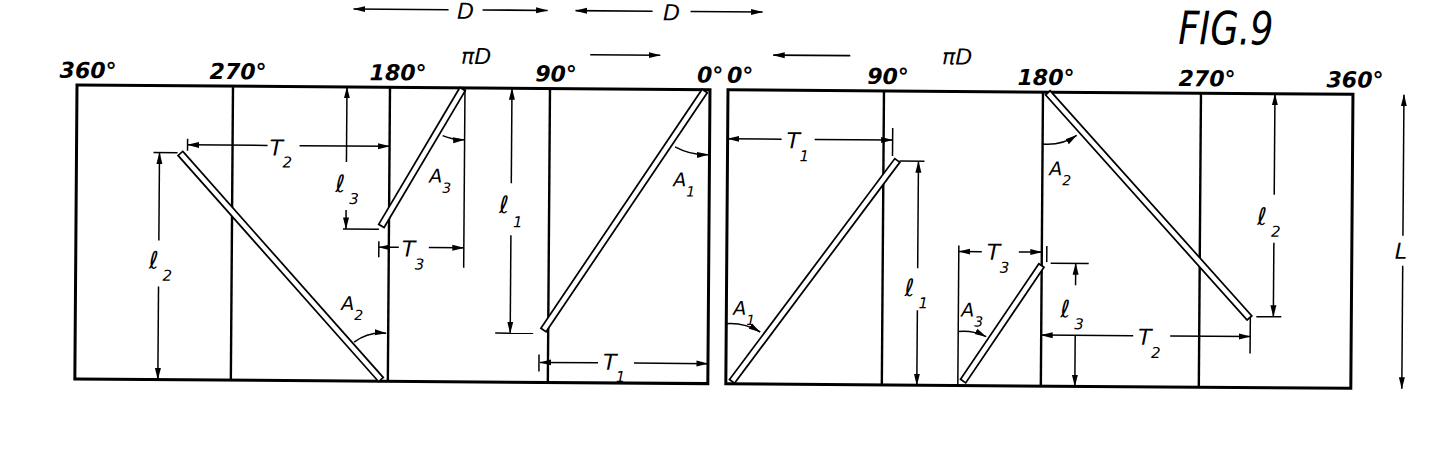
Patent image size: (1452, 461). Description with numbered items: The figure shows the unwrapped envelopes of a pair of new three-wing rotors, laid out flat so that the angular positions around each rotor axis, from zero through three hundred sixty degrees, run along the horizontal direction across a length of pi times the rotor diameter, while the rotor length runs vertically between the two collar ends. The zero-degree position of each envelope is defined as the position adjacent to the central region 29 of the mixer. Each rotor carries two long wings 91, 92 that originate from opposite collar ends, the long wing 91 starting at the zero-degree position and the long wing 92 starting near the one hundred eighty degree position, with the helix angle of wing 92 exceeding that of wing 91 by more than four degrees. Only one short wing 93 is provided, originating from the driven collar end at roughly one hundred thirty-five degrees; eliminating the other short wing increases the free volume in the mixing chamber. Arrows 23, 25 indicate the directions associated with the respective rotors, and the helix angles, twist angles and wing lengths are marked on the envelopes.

The first direction arrow 23 is at (620, 48).
The second direction arrow 25 is at (827, 50).
The central region 29 is at (710, 241).
The long wing 91 is at (586, 278).
The long wing 92 is at (275, 247).
The short wing 93 is at (437, 132).